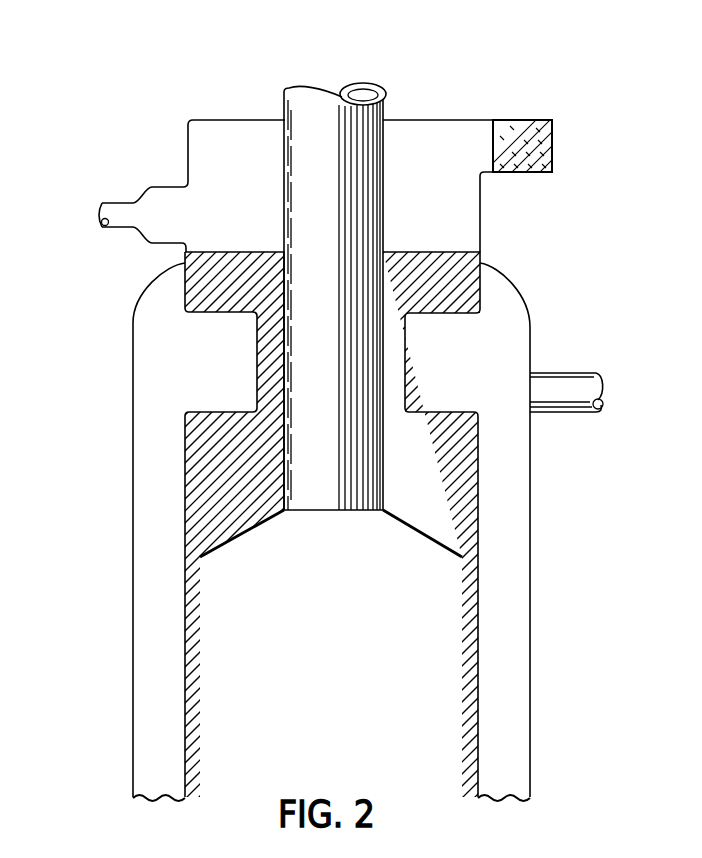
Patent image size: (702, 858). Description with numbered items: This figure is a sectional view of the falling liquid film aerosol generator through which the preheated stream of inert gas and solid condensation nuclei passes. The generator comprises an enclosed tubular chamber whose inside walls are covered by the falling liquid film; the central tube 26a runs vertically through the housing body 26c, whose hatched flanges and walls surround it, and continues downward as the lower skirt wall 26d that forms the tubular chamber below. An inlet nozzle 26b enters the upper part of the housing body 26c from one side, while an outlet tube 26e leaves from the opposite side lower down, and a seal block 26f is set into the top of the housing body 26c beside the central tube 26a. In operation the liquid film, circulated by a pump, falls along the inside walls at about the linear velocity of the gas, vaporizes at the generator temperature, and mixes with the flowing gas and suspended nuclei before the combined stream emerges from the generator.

The central tube 26a is at (360, 70).
The inlet nozzle 26b is at (140, 216).
The housing body 26c is at (247, 223).
The lower skirt wall 26d is at (445, 652).
The outlet tube 26e is at (565, 393).
The seal block 26f is at (560, 147).